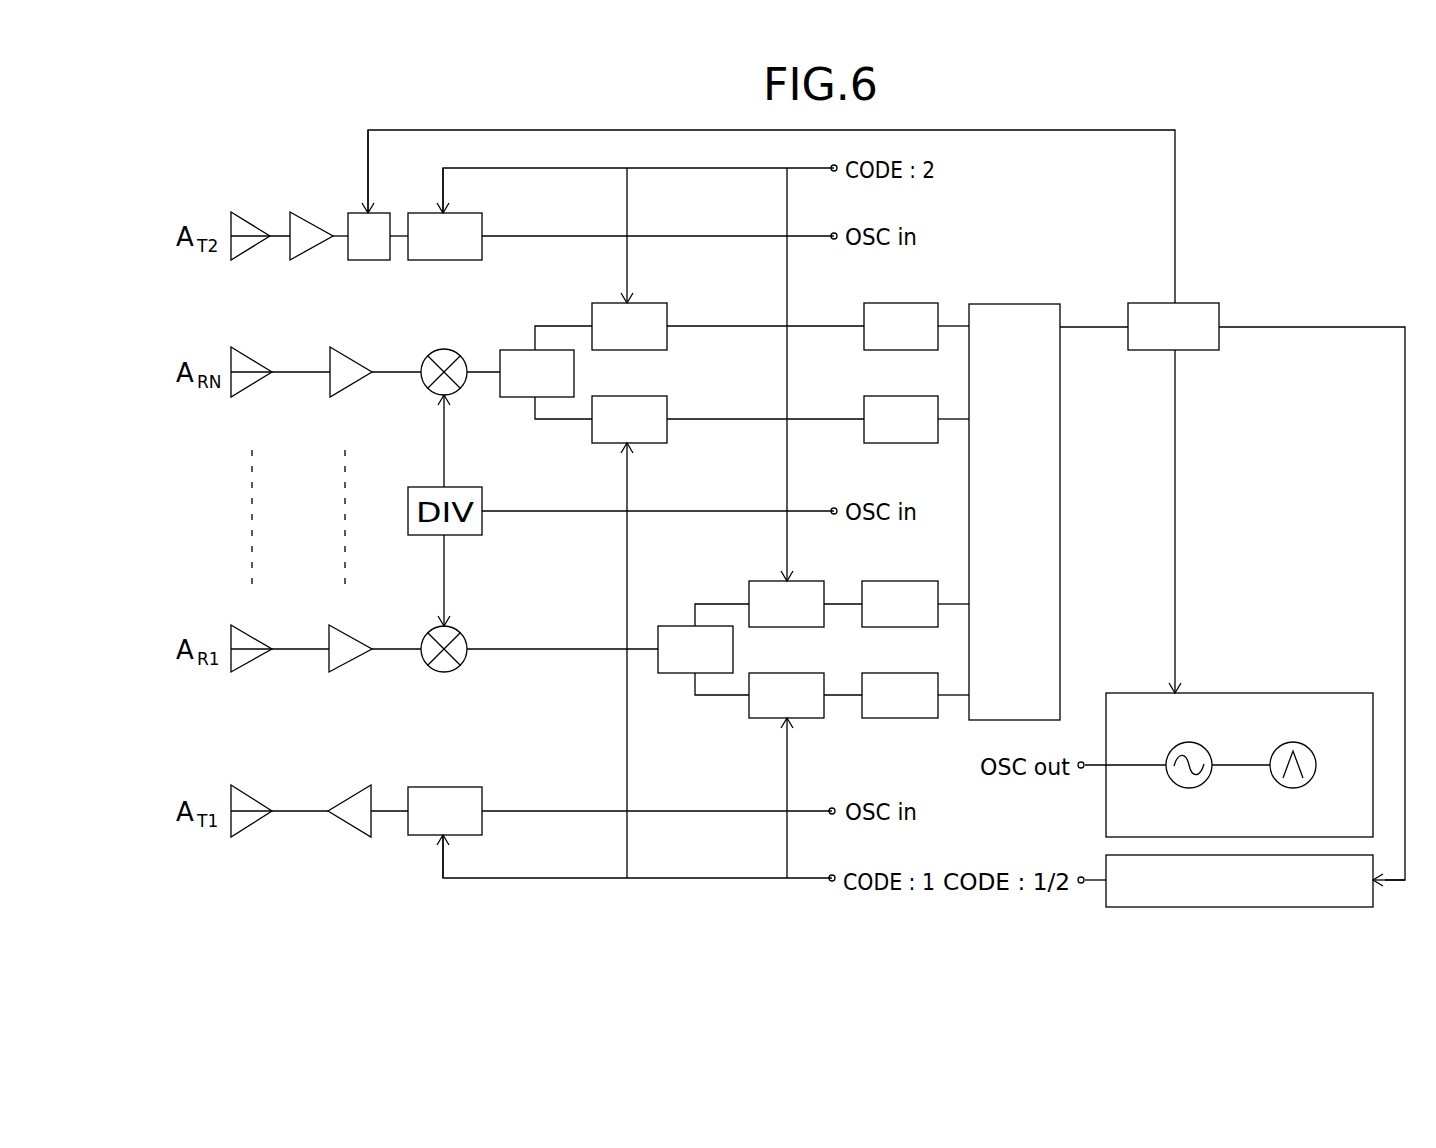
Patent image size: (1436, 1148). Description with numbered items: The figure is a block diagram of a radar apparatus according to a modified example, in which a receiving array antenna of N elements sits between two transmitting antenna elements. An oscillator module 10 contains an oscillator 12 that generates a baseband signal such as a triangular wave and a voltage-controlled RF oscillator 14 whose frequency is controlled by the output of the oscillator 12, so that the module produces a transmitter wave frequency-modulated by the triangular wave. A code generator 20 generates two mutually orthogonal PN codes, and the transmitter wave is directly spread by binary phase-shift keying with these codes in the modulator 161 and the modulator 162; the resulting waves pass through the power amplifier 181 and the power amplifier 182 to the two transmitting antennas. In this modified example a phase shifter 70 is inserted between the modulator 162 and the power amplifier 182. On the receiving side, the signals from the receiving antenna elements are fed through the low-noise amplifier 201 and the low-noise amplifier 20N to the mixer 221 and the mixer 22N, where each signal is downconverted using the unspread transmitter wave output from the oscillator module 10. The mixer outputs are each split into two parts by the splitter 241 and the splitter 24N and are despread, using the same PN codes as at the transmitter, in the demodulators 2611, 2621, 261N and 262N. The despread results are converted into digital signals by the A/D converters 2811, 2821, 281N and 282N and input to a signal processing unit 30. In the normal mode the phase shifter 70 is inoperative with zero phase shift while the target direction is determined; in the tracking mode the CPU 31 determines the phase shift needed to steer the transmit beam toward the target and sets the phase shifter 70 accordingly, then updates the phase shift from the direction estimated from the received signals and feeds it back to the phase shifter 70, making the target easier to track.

The power amplifier 182 is at (303, 218).
The modulator 162 is at (472, 213).
The phase shifter 70 is at (368, 262).
The low-noise amplifier 20N is at (330, 358).
The mixer 22N is at (455, 350).
The splitter 24N is at (518, 399).
The demodulator 262N is at (654, 303).
The A/D converter 282N is at (866, 346).
The demodulator 261N is at (652, 443).
The A/D converter 281N is at (862, 430).
The signal processing unit 30 is at (1018, 304).
The CPU 31 is at (1198, 303).
The demodulator 2621 is at (748, 592).
The A/D converter 2821 is at (900, 581).
The low-noise amplifier 201 is at (350, 636).
The mixer 221 is at (462, 666).
The splitter 241 is at (678, 673).
The demodulator 2611 is at (765, 719).
The A/D converter 2811 is at (890, 719).
The oscillator module 10 is at (1239, 746).
The voltage-controlled RF oscillator 14 is at (1168, 752).
The oscillator 12 is at (1317, 766).
The modulator 161 is at (482, 798).
The power amplifier 181 is at (352, 830).
The code generator 20 is at (1298, 908).